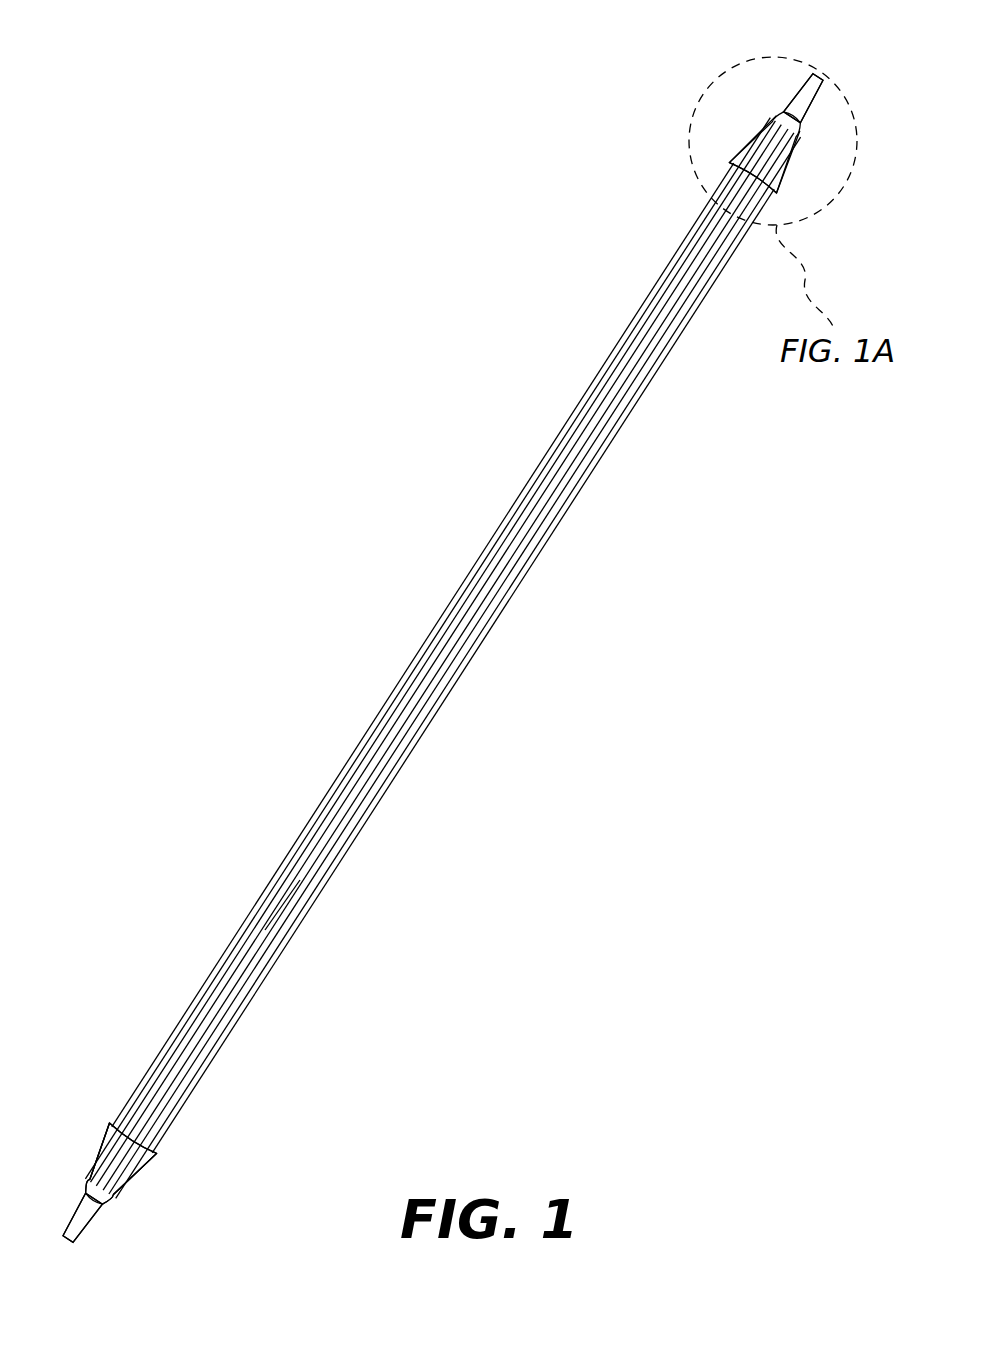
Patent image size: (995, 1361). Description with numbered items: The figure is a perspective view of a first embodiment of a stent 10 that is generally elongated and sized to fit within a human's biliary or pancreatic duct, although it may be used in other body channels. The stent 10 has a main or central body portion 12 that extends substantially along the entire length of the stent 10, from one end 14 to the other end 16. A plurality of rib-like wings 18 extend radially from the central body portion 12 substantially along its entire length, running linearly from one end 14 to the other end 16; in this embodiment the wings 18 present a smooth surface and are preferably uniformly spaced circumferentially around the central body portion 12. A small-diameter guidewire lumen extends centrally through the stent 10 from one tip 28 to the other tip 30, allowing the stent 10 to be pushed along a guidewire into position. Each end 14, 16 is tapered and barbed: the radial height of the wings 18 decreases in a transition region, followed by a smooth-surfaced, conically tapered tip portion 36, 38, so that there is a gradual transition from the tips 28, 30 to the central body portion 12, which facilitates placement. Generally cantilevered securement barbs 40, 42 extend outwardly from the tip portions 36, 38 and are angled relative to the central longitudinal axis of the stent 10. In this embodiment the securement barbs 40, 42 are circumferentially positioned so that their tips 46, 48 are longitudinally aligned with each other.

The stent 10 is at (500, 390).
The main or central body portion 12 is at (463, 659).
The end 14 is at (117, 1226).
The other end 16 is at (806, 150).
The rib-like wings 18 is at (312, 877).
The tip 28 is at (66, 1240).
The other tip 30 is at (813, 72).
The tip portion 36 is at (84, 1208).
The tip portion 38 is at (795, 107).
The securement barb 40 is at (112, 1167).
The securement barb 42 is at (758, 155).
The barb tip 46 is at (140, 1132).
The barb tip 48 is at (748, 187).